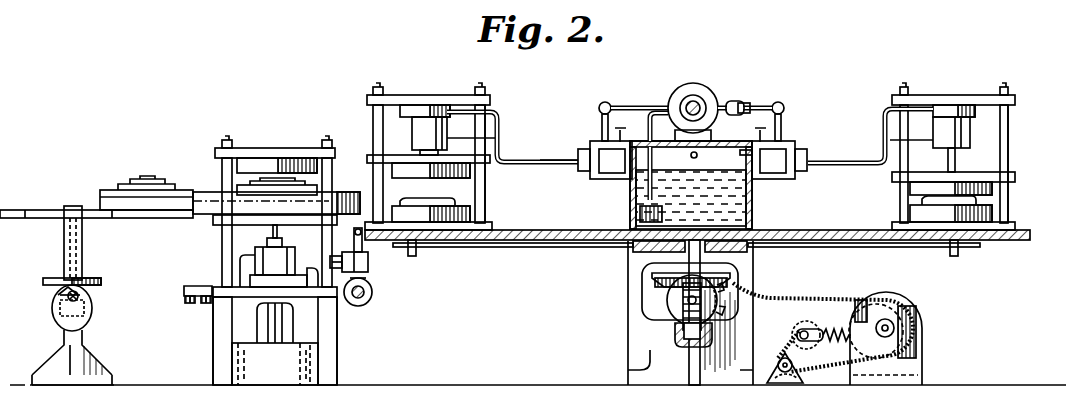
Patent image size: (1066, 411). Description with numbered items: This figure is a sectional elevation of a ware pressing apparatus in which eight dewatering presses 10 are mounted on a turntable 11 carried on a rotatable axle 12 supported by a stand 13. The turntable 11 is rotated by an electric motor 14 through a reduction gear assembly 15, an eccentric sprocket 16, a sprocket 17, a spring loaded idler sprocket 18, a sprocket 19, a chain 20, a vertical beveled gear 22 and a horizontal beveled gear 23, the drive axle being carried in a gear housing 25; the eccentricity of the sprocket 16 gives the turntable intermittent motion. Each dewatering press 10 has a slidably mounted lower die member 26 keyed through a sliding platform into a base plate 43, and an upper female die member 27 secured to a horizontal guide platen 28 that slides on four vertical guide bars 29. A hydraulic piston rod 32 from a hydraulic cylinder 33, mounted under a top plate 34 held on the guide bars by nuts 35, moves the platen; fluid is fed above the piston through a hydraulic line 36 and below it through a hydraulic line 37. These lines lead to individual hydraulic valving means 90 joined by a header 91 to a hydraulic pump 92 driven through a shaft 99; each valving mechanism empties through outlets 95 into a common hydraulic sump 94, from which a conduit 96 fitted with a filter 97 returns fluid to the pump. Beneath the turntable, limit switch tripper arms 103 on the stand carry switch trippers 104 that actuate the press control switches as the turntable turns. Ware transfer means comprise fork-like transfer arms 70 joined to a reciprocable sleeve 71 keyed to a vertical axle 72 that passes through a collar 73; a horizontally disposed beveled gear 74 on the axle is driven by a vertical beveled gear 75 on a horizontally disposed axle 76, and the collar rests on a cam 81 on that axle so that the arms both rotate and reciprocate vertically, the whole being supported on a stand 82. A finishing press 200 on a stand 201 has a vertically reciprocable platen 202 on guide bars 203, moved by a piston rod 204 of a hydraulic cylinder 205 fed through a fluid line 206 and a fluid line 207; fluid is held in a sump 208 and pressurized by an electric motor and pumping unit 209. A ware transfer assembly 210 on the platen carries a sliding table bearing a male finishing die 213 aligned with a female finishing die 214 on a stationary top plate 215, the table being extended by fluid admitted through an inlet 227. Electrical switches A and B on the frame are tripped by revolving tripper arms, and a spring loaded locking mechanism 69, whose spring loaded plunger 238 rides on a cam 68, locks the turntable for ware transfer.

The dewatering press 10 is at (436, 92).
The turntable 11 is at (830, 230).
The rotatable axle 12 is at (680, 328).
The stand 13 is at (692, 372).
The electric motor 14 is at (895, 297).
The reduction gear assembly 15 is at (915, 334).
The eccentric sprocket 16 is at (884, 298).
The sprocket 17 is at (798, 364).
The spring loaded idler sprocket 18 is at (796, 334).
The sprocket 19 is at (672, 305).
The chain 20 is at (795, 306).
The vertical beveled gear 22 is at (667, 298).
The horizontal beveled gear 23 is at (650, 283).
The gear housing 25 is at (756, 272).
The lower die member 26 is at (470, 210).
The upper female die member 27 is at (465, 170).
The horizontal guide platen 28 is at (1015, 178).
The vertical guide bars 29 is at (485, 195).
The hydraulic piston rod 32 is at (956, 164).
The hydraulic cylinder 33 is at (420, 120).
The top plate 34 is at (455, 95).
The nuts 35 is at (485, 90).
The hydraulic line 36 is at (500, 110).
The hydraulic line 37 is at (500, 133).
The base plate 43 is at (1018, 226).
The cam 68 is at (372, 292).
The spring loaded locking mechanism 69 is at (368, 268).
The fork-like transfer arms 70 is at (32, 210).
The reciprocable sleeve 71 is at (64, 242).
The vertical axle 72 is at (82, 244).
The collar 73 is at (47, 278).
The horizontally disposed beveled gear 74 is at (58, 306).
The vertical beveled gear 75 is at (56, 294).
The horizontally disposed axle 76 is at (78, 296).
The cam 81 is at (92, 316).
The stand 82 is at (92, 362).
The hydraulic valving means 90 is at (602, 150).
The header 91 is at (752, 102).
The hydraulic pump 92 is at (705, 92).
The hydraulic sump 94 is at (752, 200).
The outlets 95 is at (740, 150).
The conduit 96 is at (647, 190).
The filter 97 is at (640, 212).
The shaft 99 is at (693, 101).
The limit switch tripper arms 103 is at (520, 250).
The switch trippers 104 is at (416, 252).
The finishing press 200 is at (283, 146).
The stand 201 is at (337, 356).
The vertically reciprocable platen 202 is at (212, 222).
The guide bars 203 is at (240, 262).
The piston rod 204 is at (270, 232).
The hydraulic cylinder 205 is at (292, 262).
The fluid line 206 is at (232, 322).
The fluid line 207 is at (318, 328).
The sump 208 is at (240, 362).
The electric motor and pumping unit 209 is at (276, 322).
The ware transfer assembly 210 is at (170, 176).
The male finishing die 213 is at (240, 188).
The female finishing die 214 is at (298, 168).
The stationary top plate 215 is at (250, 148).
The inlet 227 is at (337, 302).
The spring loaded plunger 238 is at (363, 250).
The electrical switch A is at (184, 291).
The electrical switch B is at (205, 287).